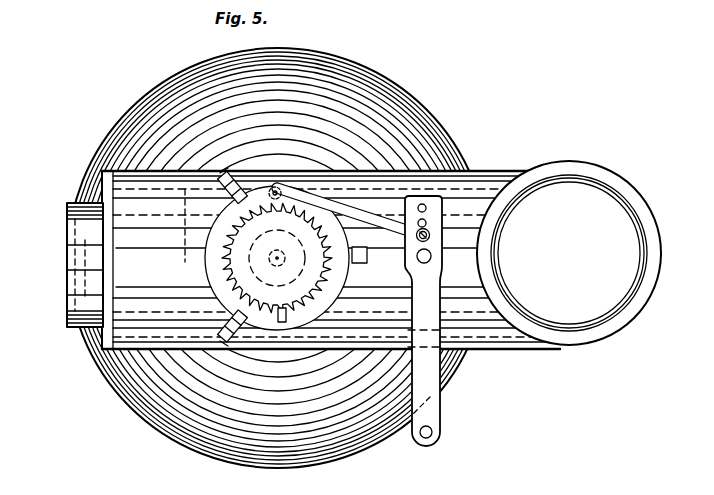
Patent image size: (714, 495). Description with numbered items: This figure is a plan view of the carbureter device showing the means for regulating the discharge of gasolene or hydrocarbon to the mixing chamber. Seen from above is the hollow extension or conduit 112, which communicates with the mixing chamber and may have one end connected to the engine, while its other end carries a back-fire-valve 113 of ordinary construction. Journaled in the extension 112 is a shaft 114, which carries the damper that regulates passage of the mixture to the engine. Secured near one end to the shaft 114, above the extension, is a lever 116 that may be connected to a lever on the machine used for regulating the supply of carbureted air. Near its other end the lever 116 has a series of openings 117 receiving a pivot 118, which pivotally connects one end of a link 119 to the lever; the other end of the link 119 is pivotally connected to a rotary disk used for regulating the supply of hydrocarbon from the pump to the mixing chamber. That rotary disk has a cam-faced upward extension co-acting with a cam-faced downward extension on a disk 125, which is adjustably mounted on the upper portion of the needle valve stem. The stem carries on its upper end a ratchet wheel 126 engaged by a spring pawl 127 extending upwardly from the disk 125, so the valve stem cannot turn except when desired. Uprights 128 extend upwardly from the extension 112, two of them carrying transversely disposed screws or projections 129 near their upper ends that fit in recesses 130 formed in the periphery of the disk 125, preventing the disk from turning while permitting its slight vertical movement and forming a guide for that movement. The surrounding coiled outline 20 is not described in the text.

The spiral spring 20 is at (132, 116).
The hollow extension or conduit 112 is at (381, 255).
The back-fire-valve 113 is at (70, 275).
The shaft 114 is at (431, 254).
The lever 116 is at (432, 415).
The openings 117 is at (427, 222).
The pivot 118 is at (416, 238).
The link 119 is at (366, 213).
The disk 125 is at (206, 242).
The ratchet wheel 126 is at (243, 278).
The spring pawl 127 is at (281, 323).
The uprights 128 is at (275, 186).
The screws or projections 129 is at (231, 159).
The recesses 130 is at (232, 198).